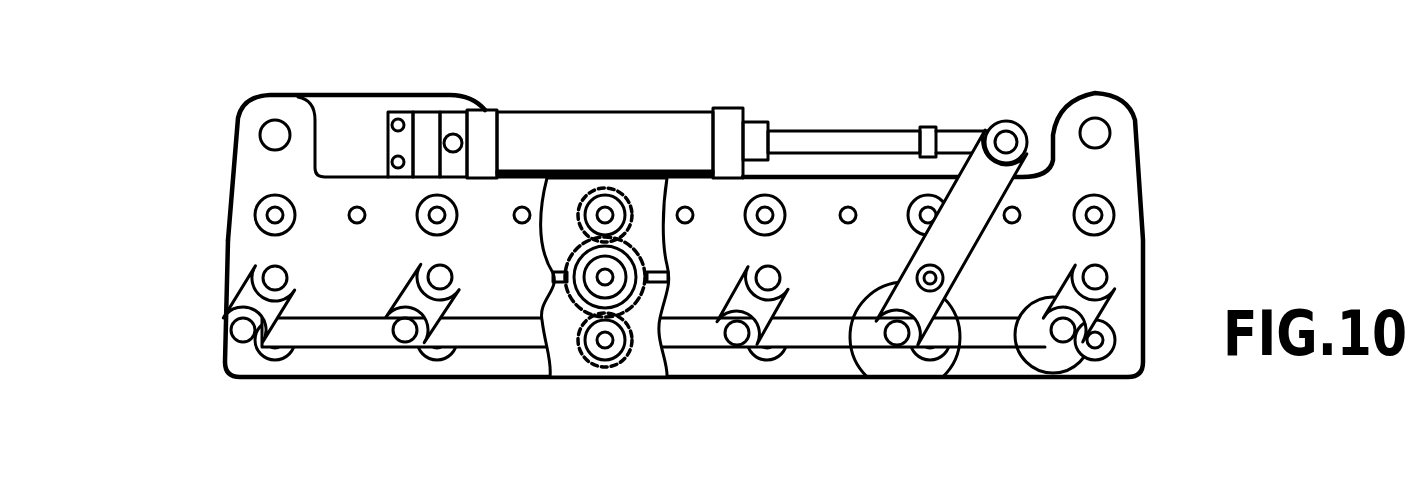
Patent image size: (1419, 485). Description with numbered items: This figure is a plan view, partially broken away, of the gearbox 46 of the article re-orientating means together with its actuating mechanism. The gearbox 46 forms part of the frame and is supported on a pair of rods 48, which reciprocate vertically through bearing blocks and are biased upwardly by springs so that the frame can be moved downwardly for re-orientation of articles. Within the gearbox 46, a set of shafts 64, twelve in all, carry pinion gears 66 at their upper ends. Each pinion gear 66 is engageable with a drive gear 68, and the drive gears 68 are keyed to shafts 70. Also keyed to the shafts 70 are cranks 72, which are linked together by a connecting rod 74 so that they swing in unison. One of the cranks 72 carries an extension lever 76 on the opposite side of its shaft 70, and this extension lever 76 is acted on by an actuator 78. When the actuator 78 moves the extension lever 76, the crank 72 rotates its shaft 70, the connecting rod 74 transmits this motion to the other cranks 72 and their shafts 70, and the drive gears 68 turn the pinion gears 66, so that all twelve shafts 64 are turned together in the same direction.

The gearbox 46 is at (1168, 217).
The rods 48 is at (271, 133).
The shafts 64 is at (272, 213).
The pinion gears 66 is at (630, 185).
The drive gears 68 is at (572, 318).
The shafts 70 is at (607, 280).
The cranks 72 is at (257, 298).
The connecting rod 74 is at (353, 332).
The extension lever 76 is at (960, 200).
The actuator 78 is at (549, 138).